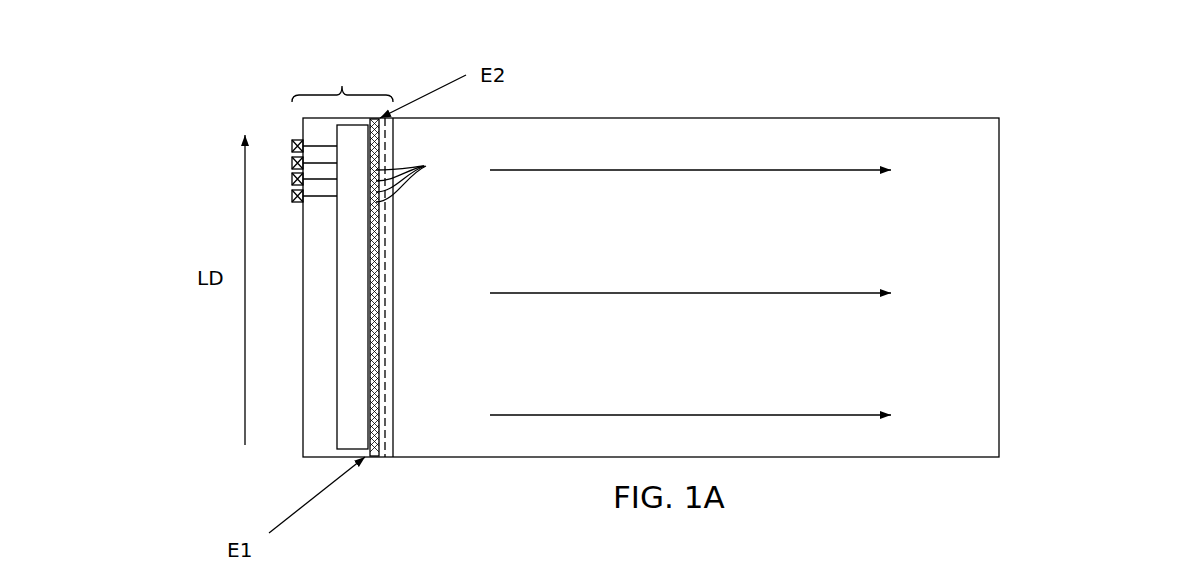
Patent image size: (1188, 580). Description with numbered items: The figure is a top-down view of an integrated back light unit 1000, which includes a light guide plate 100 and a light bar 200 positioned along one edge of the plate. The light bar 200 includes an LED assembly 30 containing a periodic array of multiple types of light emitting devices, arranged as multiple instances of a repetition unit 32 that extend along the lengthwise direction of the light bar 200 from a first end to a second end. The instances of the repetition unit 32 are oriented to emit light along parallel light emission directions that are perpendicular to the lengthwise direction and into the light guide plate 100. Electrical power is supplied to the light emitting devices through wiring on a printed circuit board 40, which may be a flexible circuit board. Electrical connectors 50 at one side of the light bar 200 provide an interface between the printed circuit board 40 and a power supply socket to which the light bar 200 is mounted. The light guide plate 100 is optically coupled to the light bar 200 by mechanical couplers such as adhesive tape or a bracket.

The integrated back light unit 1000 is at (1020, 138).
The light guide plate 100 is at (715, 279).
The light bar 200 is at (342, 78).
The electrical connectors 50 is at (291, 142).
The printed circuit board 40 is at (368, 195).
The LED assembly 30 is at (386, 463).
The repetition unit 32 is at (416, 180).